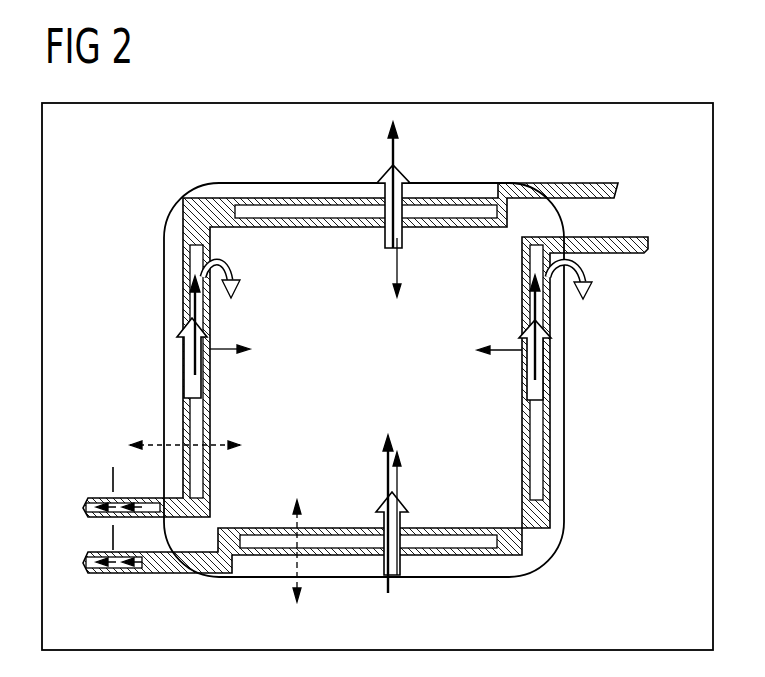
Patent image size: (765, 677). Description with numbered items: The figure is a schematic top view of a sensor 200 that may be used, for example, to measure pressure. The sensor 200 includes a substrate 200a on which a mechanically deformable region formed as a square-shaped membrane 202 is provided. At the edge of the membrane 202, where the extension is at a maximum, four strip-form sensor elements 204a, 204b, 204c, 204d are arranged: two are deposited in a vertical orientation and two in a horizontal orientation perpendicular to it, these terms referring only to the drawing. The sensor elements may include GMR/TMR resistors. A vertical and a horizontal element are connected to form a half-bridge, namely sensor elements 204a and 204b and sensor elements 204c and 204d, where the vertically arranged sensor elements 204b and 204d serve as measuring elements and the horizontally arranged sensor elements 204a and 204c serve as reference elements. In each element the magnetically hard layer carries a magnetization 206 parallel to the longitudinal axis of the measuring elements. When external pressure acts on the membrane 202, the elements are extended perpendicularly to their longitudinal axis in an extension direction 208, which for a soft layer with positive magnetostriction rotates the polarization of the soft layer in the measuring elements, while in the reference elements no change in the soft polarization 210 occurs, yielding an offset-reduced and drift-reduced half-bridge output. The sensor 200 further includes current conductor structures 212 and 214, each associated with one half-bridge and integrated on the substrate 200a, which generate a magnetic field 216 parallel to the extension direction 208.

The sensor 200 is at (150, 432).
The substrate 200a is at (605, 103).
The membrane 202 is at (462, 230).
The sensor element 204a is at (257, 212).
The sensor element 204b is at (197, 260).
The sensor element 204c is at (468, 538).
The sensor element 204d is at (535, 472).
The magnetization 206 is at (192, 387).
The extension direction 208 is at (399, 258).
The soft polarization 210 is at (391, 150).
The current conductor structure 212 is at (553, 185).
The current conductor structure 214 is at (640, 237).
The magnetic field 216 is at (303, 592).